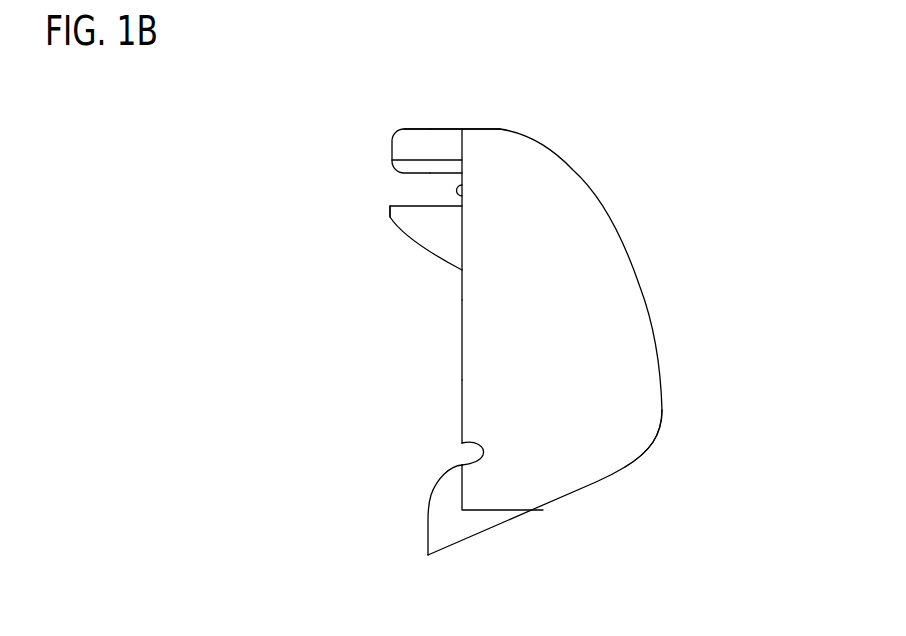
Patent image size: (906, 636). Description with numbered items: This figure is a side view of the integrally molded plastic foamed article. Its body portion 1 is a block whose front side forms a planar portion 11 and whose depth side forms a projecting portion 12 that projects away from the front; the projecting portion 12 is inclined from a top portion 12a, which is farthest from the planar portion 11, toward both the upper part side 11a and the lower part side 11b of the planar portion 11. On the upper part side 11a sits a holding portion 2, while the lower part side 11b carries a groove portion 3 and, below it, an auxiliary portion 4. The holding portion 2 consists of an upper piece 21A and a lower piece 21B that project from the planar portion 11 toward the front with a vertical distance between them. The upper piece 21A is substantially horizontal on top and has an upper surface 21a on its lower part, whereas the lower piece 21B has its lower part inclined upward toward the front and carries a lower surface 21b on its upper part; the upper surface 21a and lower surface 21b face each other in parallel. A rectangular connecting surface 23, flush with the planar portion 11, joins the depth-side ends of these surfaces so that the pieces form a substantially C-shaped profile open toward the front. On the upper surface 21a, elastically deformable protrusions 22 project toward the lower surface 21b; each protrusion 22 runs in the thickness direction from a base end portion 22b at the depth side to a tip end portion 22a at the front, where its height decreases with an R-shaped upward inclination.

The body portion 1 is at (653, 273).
The holding portion 2 is at (367, 185).
The groove portion 3 is at (472, 462).
The auxiliary portion 4 is at (428, 532).
The planar portion 11 is at (462, 350).
The upper part side 11a is at (382, 263).
The lower part side 11b is at (430, 455).
The projecting portion 12 is at (610, 352).
The top portion 12a is at (662, 426).
The upper surface 21a is at (428, 157).
The upper piece 21A is at (453, 147).
The lower surface 21b is at (409, 203).
The lower piece 21B is at (440, 237).
The protrusion 22 is at (413, 162).
The tip end portion 22a is at (393, 170).
The base end portion 22b is at (468, 164).
The connecting surface 23 is at (463, 197).